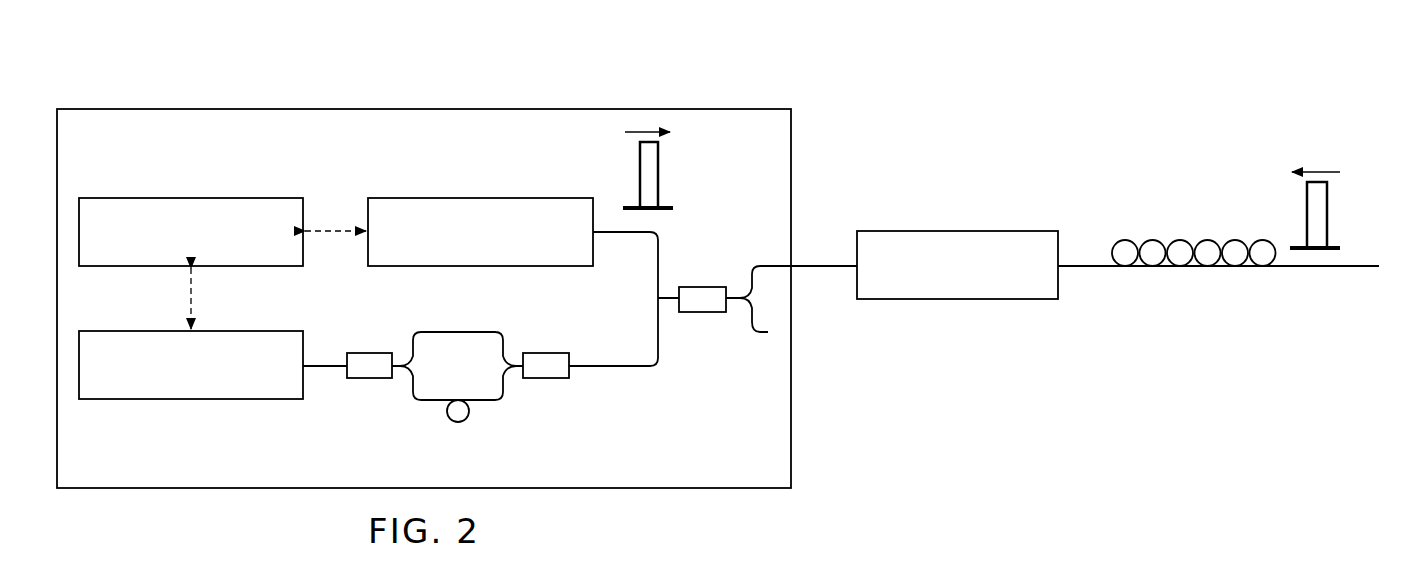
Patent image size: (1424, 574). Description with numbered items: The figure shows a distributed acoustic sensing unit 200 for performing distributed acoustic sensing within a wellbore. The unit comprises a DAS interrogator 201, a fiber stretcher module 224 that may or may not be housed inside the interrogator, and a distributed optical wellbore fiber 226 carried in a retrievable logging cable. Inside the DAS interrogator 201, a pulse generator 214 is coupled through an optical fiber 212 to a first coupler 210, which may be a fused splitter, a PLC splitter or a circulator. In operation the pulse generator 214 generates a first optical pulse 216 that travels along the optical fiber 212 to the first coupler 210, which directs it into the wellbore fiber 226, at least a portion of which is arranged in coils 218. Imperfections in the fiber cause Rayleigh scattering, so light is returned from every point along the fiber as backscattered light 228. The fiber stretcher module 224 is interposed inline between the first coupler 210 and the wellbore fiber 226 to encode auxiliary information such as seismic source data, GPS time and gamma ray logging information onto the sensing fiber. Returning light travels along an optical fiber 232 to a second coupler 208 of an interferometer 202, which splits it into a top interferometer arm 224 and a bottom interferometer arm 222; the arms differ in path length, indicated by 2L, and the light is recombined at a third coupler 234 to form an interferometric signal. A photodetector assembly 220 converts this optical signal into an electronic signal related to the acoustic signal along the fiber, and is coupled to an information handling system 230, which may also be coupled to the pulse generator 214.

The distributed acoustic sensing unit 200 is at (1092, 75).
The DAS interrogator 201 is at (257, 108).
The interferometer 202 is at (503, 422).
The second coupler 208 is at (548, 380).
The first coupler 210 is at (700, 287).
The optical fiber 212 is at (657, 278).
The pulse generator 214 is at (480, 267).
The first optical pulse 216 is at (660, 178).
The coils 218 is at (1225, 197).
The photodetector assembly 220 is at (178, 402).
The bottom interferometer arm 222 is at (425, 403).
The fiber stretcher module 224 is at (958, 231).
The distributed optical wellbore fiber 226 is at (1290, 268).
The backscattered light 228 is at (1328, 215).
The information handling system 230 is at (178, 197).
The optical fiber 232 is at (632, 368).
The third coupler 234 is at (368, 380).
The path length difference 2L is at (458, 425).